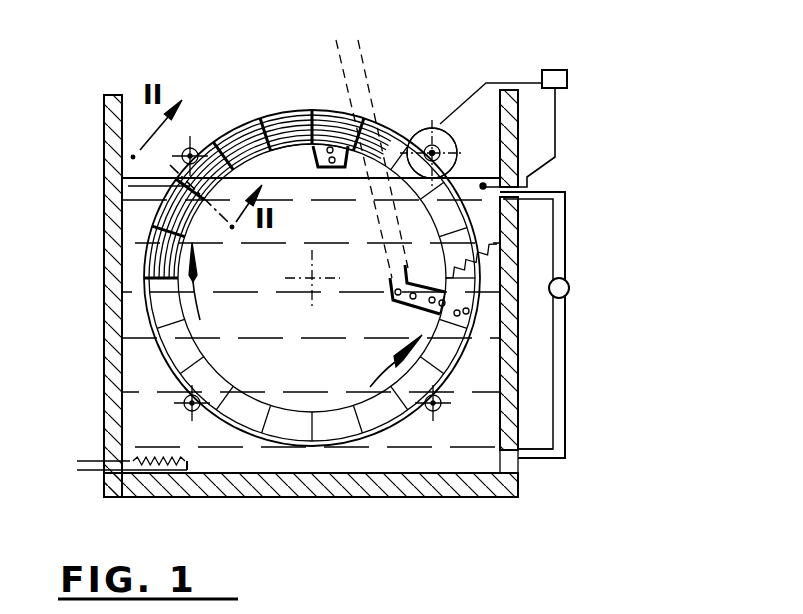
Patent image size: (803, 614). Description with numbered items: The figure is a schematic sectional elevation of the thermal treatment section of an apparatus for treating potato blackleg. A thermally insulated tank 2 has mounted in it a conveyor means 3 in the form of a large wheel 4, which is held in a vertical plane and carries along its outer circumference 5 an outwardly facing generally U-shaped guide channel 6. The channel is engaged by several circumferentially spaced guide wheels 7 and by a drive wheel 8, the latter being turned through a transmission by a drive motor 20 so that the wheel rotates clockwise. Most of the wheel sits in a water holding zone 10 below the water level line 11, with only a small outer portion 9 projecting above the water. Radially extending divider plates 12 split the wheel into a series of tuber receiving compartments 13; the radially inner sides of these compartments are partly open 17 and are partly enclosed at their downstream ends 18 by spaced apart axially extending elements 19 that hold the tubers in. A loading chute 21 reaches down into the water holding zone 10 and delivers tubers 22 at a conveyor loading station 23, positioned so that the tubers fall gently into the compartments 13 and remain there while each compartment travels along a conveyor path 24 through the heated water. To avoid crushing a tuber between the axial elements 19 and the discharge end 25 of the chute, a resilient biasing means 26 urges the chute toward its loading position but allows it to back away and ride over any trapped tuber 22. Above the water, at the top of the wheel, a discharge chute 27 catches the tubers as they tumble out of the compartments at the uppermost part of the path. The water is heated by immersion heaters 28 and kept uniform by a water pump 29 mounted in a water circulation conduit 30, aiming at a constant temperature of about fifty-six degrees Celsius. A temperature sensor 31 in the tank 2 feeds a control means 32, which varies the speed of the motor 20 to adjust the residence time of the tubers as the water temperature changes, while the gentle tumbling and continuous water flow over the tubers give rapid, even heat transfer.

The thermally insulated tank 2 is at (362, 480).
The conveyor means 3 is at (403, 423).
The wheel 4 is at (272, 440).
The outer circumference 5 is at (160, 345).
The guide channel 6 is at (148, 300).
The guide wheels 7 is at (182, 405).
The drive wheel 8 is at (432, 150).
The outer portion 9 is at (255, 135).
The water holding zone 10 is at (128, 198).
The water level line 11 is at (120, 178).
The divider plates 12 is at (387, 423).
The tuber receiving compartments 13 is at (330, 432).
The partly open inner side 17 is at (285, 168).
The downstream ends 18 is at (240, 130).
The axially extending elements 19 is at (279, 120).
The drive motor 20 is at (433, 150).
The loading chute 21 is at (366, 90).
The tubers 22 is at (405, 297).
The conveyor loading station 23 is at (440, 312).
The conveyor path 24 is at (196, 300).
The discharge end 25 is at (510, 288).
The resilient biasing means 26 is at (455, 268).
The discharge chute 27 is at (343, 150).
The immersion heaters 28 is at (165, 470).
The water pump 29 is at (569, 292).
The water circulation conduit 30 is at (566, 328).
The temperature sensor 31 is at (483, 183).
The control means 32 is at (567, 80).